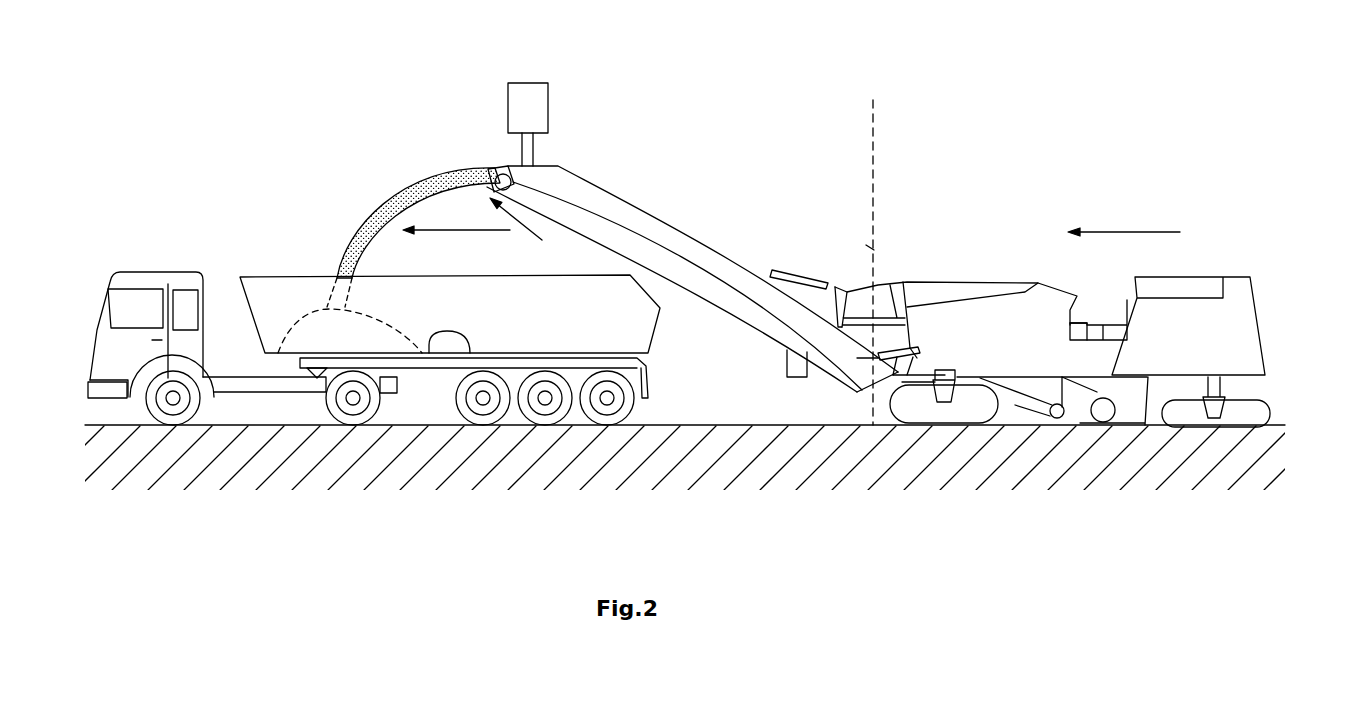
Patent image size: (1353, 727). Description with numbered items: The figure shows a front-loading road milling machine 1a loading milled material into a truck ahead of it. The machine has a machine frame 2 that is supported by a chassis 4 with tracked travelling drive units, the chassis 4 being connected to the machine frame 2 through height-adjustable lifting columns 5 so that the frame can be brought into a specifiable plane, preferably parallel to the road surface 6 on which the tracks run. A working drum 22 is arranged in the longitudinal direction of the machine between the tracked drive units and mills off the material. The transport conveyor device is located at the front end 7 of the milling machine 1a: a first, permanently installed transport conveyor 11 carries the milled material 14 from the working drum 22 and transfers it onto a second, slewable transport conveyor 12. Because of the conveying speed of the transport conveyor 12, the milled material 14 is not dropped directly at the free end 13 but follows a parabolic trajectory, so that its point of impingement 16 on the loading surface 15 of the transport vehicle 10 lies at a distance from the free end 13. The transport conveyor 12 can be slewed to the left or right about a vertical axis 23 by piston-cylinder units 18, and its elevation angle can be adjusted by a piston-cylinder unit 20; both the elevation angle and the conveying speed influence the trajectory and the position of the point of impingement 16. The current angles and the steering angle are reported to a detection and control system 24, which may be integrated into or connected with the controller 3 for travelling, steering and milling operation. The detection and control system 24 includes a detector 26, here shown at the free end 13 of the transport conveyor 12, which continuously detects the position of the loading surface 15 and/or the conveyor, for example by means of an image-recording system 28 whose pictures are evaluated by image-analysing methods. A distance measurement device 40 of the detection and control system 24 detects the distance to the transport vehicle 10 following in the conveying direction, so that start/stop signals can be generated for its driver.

The front-loading road milling machine 1a is at (1086, 359).
The machine frame 2 is at (935, 283).
The controller 3 is at (1159, 258).
The detection and control system 24 is at (1086, 323).
The chassis 4 is at (1283, 403).
The lifting columns 5 is at (1242, 404).
The road surface 6 is at (730, 424).
The front end 7 is at (870, 248).
The transport vehicle 10 is at (374, 353).
The first transport conveyor 11 is at (1017, 388).
The second transport conveyor 12 is at (650, 210).
The free end 13 is at (485, 227).
The milled material 14 is at (380, 206).
The loading surface 15 is at (429, 353).
The point of impingement 16 is at (302, 306).
The piston-cylinder units 18 is at (898, 362).
The piston-cylinder unit 20 is at (793, 268).
The working drum 22 is at (1118, 432).
The vertical axis 23 is at (880, 142).
The detector 26 is at (557, 97).
The image-recording system 28 is at (533, 98).
The distance measurement device 40 is at (793, 364).